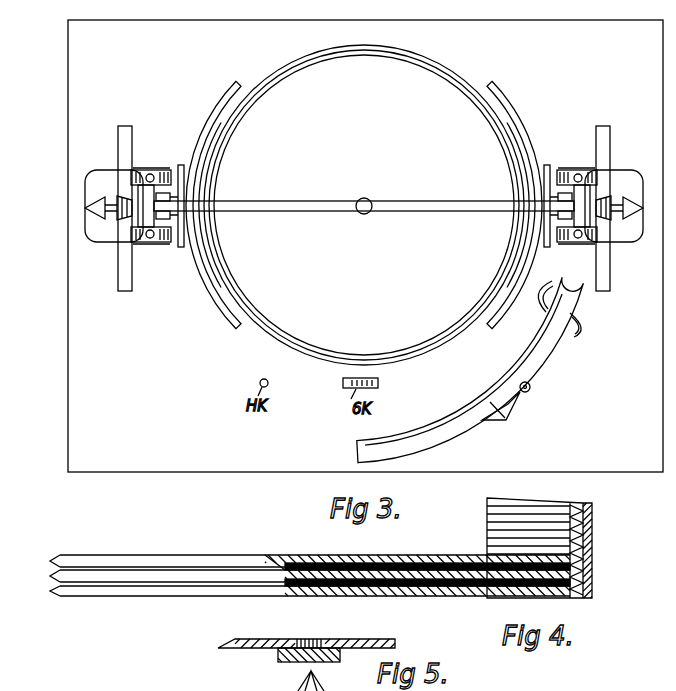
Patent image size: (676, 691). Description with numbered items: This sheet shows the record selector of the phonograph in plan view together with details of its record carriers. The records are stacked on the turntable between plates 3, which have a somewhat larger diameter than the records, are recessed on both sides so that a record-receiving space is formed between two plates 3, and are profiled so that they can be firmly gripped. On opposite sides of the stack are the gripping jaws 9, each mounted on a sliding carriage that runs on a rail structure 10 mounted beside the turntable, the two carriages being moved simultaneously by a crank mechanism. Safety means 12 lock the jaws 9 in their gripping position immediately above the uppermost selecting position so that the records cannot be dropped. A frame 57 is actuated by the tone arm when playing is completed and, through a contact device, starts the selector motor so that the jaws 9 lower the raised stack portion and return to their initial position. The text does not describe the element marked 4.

In FIG. 3, the plates 3 is at (437, 83).
In FIG. 4, the plates 3 is at (55, 560).
In FIG. 5, the plates 3 is at (361, 640).
In FIG. 4, the hub plate 4 is at (300, 553).
In FIG. 5, the hub plate 4 is at (284, 656).
In FIG. 3, the gripping jaws 9 is at (203, 147).
In FIG. 4, the gripping jaws 9 is at (590, 513).
In FIG. 3, the rail structures 10 is at (290, 205).
In FIG. 3, the safety means 12 is at (100, 170).
In FIG. 3, the frame 57 is at (511, 400).